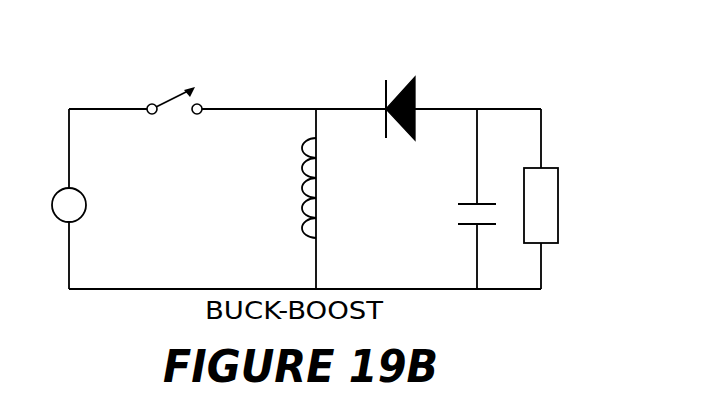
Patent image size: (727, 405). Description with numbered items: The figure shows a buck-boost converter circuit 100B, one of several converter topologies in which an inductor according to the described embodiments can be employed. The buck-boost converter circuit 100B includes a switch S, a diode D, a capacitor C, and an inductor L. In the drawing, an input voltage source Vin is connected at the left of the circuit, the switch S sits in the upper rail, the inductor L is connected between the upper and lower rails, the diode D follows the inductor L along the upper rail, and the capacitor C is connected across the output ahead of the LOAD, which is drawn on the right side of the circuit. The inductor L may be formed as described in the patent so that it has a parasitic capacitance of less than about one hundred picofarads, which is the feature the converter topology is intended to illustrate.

The buck-boost converter circuit 100B is at (546, 85).
The input voltage source Vin is at (56, 226).
The switch S is at (174, 88).
The inductor L is at (296, 188).
The diode D is at (400, 128).
The capacitor C is at (460, 217).
The load LOAD is at (583, 205).